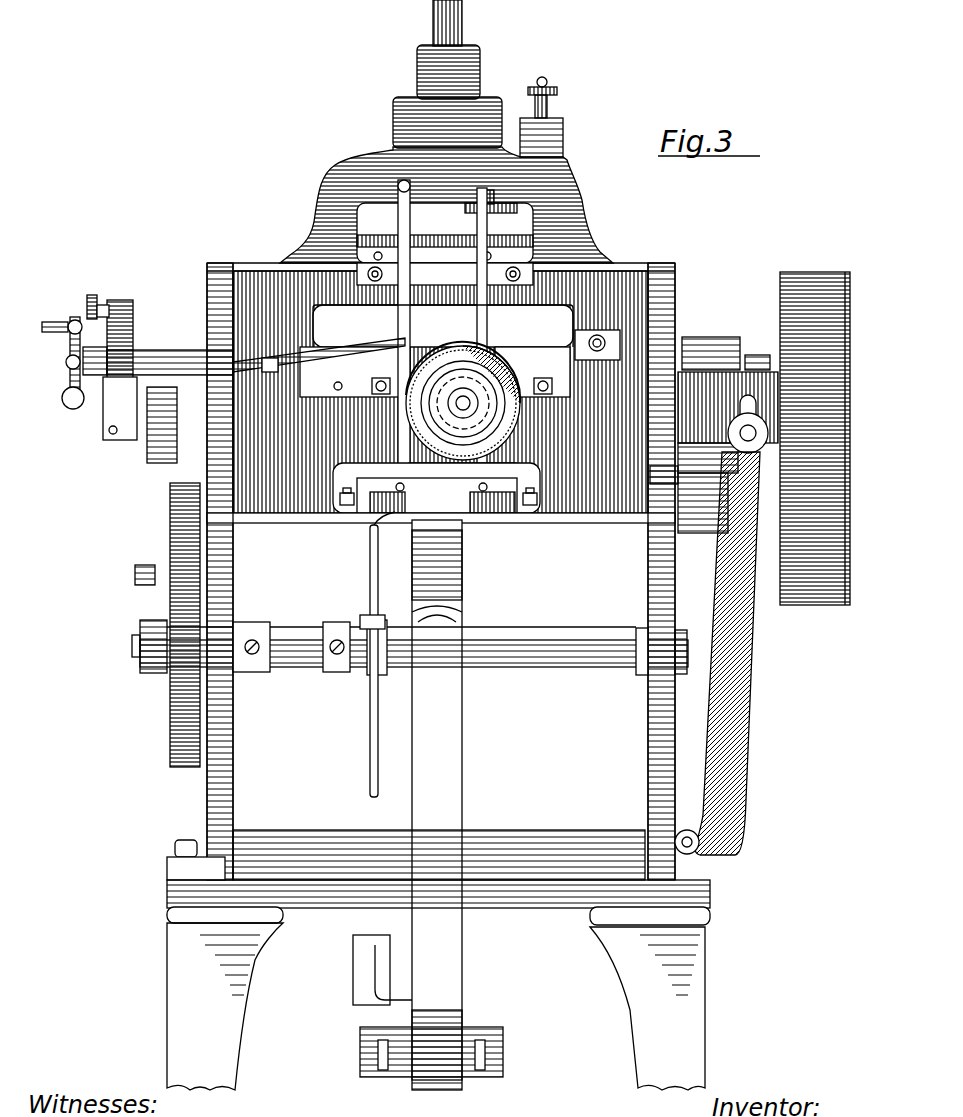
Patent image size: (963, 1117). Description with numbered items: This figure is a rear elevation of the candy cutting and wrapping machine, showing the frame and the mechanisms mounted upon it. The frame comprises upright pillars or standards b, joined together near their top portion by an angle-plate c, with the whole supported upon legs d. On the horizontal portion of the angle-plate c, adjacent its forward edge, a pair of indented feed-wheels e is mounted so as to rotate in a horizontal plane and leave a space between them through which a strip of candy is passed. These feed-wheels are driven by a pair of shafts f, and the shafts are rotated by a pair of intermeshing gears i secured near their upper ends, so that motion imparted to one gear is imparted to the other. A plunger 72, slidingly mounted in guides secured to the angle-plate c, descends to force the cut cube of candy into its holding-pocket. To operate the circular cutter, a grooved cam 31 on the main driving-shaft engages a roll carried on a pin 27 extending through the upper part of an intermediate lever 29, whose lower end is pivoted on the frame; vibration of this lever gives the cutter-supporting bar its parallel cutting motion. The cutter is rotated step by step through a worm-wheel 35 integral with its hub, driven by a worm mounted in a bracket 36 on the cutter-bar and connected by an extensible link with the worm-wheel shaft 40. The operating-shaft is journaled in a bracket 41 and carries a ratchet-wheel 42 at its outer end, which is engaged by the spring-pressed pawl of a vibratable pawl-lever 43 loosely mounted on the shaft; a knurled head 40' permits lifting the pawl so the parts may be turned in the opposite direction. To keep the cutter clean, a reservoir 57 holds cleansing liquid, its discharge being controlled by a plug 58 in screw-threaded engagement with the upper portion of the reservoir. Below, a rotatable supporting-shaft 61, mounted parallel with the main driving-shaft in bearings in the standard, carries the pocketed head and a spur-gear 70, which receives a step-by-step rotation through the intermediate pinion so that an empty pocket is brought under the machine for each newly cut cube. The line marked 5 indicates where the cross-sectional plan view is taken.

The plunger 72 is at (462, 32).
The plug 58 is at (547, 100).
The reservoir 57 is at (563, 155).
The angle-plate c is at (593, 250).
The intermeshing gears i is at (550, 247).
The shafts f is at (400, 325).
The bracket 36 is at (513, 362).
The worm-wheel 35 is at (463, 403).
The indented feed-wheels e is at (387, 507).
The bracket 41 is at (158, 350).
The worm-wheel shaft 40 is at (289, 347).
The knurled head 40' is at (89, 293).
The ratchet-wheel 42 is at (133, 317).
The vibratable pawl-lever 43 is at (110, 403).
The section line 5 is at (737, 322).
The spur-gear 70 is at (175, 765).
The rotatable supporting-shaft 61 is at (590, 663).
The upright pillars or standards b is at (228, 750).
The legs d is at (230, 1003).
The grooved cam 31 is at (700, 353).
The pin 27 is at (755, 430).
The intermediate lever 29 is at (762, 563).